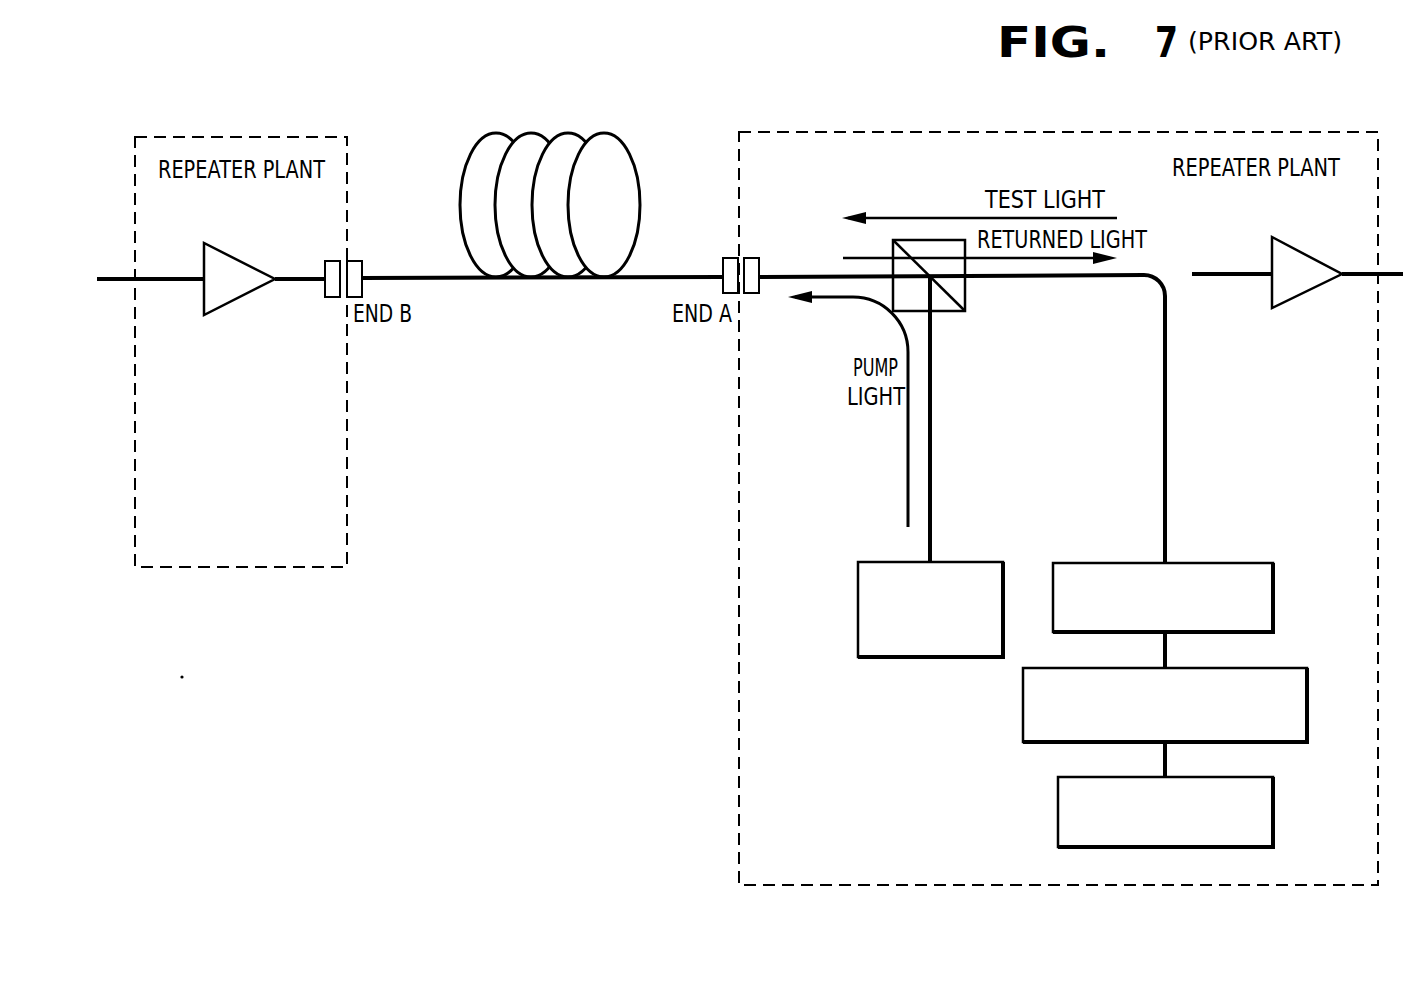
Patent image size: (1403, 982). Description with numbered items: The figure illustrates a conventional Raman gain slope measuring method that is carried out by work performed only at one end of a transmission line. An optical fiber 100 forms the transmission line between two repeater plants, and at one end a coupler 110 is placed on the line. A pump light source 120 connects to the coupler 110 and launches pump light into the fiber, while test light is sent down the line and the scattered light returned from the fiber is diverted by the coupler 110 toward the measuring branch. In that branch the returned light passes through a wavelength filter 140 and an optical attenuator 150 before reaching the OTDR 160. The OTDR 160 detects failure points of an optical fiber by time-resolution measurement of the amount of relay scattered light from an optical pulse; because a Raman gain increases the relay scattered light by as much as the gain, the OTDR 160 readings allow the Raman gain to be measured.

The optical fiber (transmission line) 100 is at (640, 170).
The optical coupler / beam splitter 110 is at (912, 240).
The pump light source 120 is at (955, 562).
The wavelength filter 140 is at (1195, 561).
The optical attenuator 150 is at (1280, 668).
The OTDR (optical time domain reflectometer) 160 is at (1273, 817).